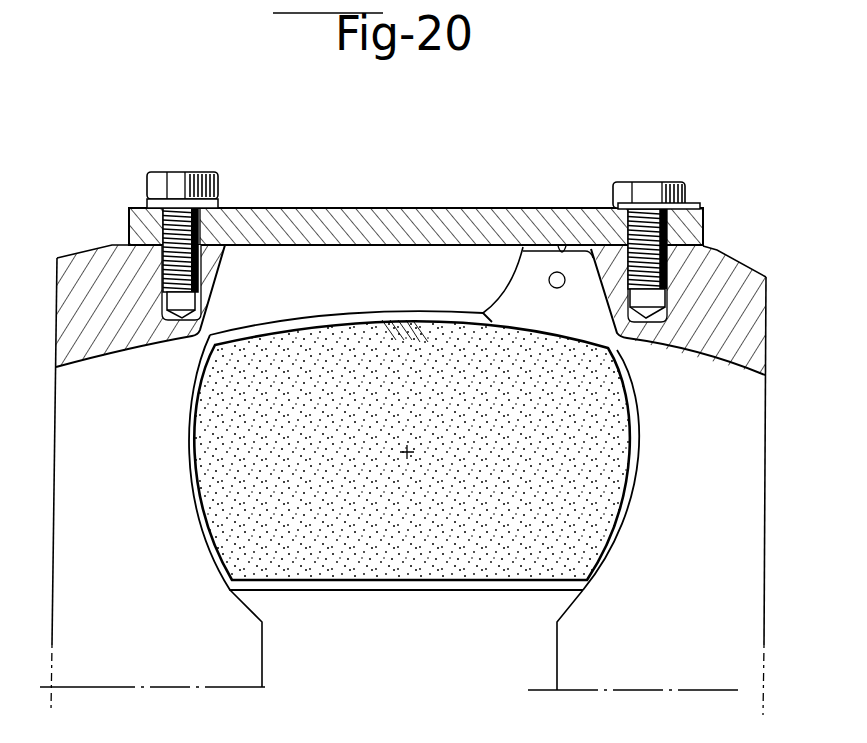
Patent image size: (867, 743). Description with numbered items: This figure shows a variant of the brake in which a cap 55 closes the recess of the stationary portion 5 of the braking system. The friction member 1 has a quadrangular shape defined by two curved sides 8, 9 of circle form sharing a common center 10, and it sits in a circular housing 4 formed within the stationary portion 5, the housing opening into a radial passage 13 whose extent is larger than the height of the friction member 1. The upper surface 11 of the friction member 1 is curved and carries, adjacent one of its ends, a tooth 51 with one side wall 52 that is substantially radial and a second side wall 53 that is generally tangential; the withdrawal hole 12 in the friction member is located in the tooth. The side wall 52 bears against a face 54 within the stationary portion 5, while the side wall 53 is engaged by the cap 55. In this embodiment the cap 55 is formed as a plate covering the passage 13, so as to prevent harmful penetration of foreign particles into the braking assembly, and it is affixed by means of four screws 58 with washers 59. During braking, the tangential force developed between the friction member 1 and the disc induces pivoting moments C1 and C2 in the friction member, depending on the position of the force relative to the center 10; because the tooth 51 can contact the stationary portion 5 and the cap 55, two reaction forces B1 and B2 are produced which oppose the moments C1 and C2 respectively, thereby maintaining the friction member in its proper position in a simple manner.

The friction member 1 is at (413, 547).
The circular housing 4 is at (210, 342).
The stationary portion 5 is at (93, 280).
The curved side 8 is at (194, 447).
The curved side 9 is at (621, 459).
The center 10 is at (410, 455).
The upper surface 11 is at (475, 315).
The withdrawal hole 12 is at (554, 288).
The radial passage 13 is at (298, 283).
The tooth 51 is at (518, 310).
The side wall 52 is at (570, 283).
The side wall 53 is at (561, 250).
The face 54 is at (655, 307).
The cap 55 is at (382, 233).
The screw 58 is at (187, 182).
The washer 59 is at (150, 204).
The reaction force B1 is at (612, 323).
The reaction force B2 is at (535, 250).
The pivoting moment C1 is at (497, 393).
The pivoting moment C2 is at (325, 392).